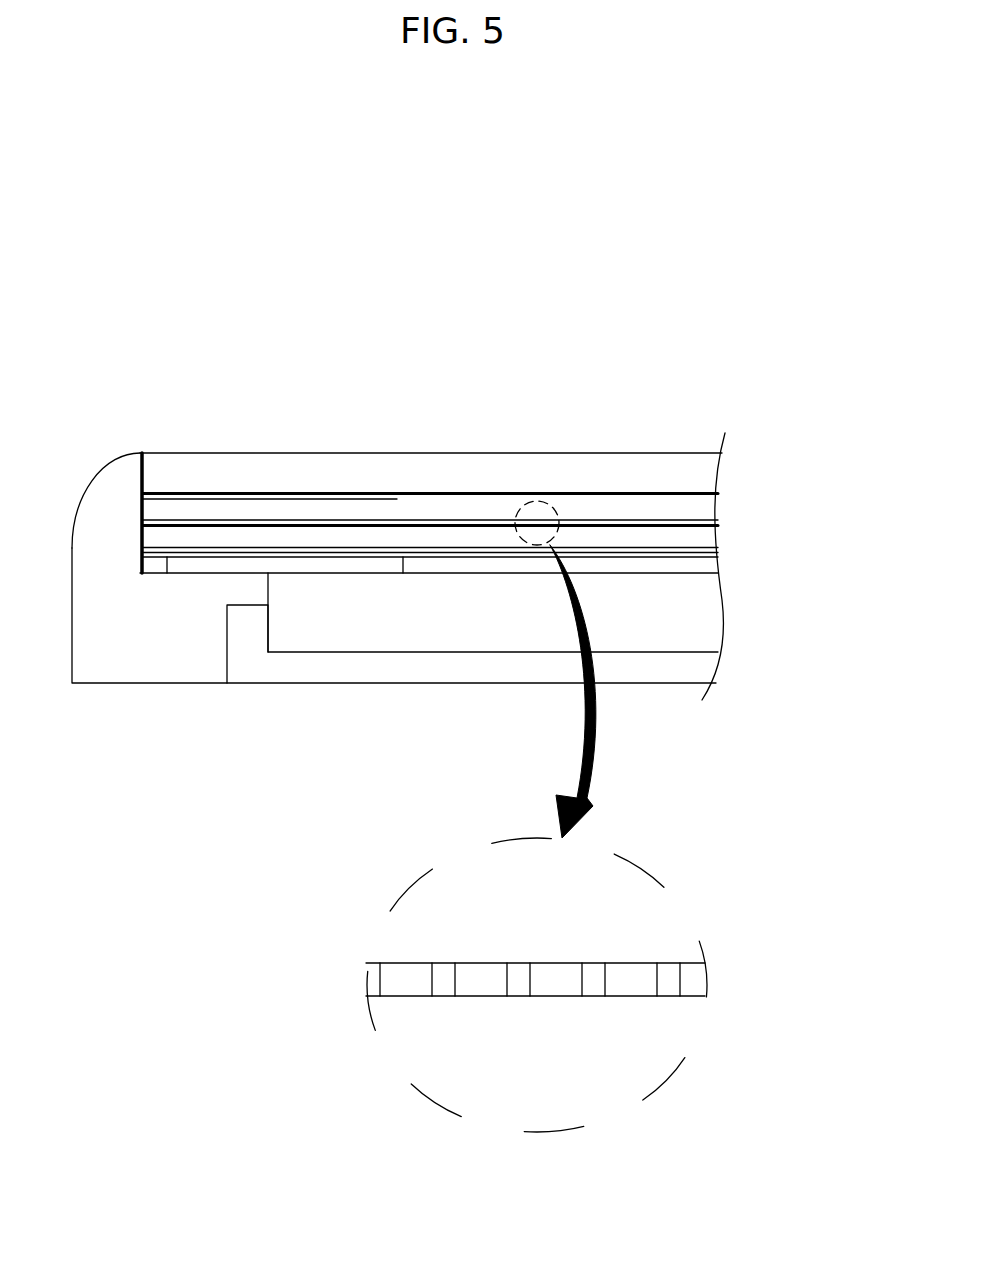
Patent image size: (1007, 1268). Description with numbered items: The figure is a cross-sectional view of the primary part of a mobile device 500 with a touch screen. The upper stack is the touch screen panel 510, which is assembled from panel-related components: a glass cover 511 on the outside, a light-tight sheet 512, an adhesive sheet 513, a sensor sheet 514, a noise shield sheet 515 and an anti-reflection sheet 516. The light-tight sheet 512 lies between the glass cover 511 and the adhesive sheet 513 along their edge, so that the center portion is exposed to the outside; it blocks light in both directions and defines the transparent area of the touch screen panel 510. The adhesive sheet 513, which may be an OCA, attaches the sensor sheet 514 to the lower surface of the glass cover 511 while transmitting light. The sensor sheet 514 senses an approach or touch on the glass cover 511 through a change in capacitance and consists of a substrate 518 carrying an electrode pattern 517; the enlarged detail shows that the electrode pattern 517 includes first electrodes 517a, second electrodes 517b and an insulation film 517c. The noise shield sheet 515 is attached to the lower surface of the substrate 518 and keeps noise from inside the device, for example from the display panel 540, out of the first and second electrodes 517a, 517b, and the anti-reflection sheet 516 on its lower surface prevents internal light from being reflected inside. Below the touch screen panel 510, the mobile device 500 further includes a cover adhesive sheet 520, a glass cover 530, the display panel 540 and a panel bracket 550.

The mobile device 500 is at (787, 232).
The touch screen panel 510 is at (288, 357).
The glass cover 511 is at (282, 467).
The light-tight sheet 512 is at (345, 498).
The adhesive sheet 513 is at (440, 508).
The sensor sheet 514 is at (497, 360).
The noise shield sheet 515 is at (640, 552).
The anti-reflection sheet 516 is at (702, 557).
The electrode pattern 517 is at (497, 520).
The first electrode 517a is at (558, 970).
The second electrode 517b is at (630, 975).
The insulation film 517c is at (592, 975).
The substrate 518 is at (575, 540).
The cover adhesive sheet 520 is at (185, 562).
The glass cover 530 is at (147, 672).
The display panel 540 is at (383, 643).
The panel bracket 550 is at (310, 672).